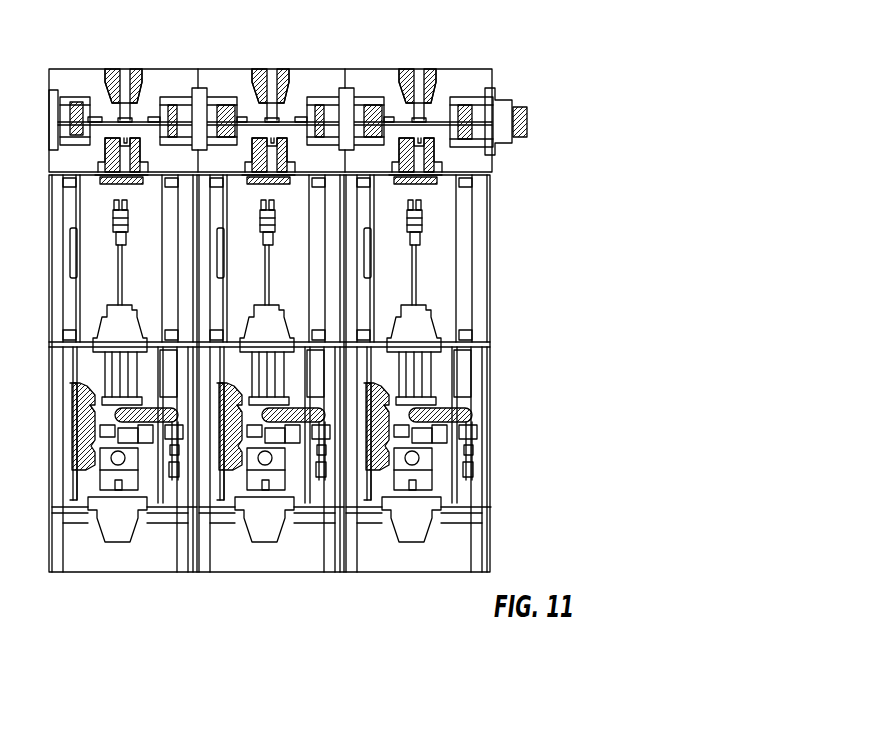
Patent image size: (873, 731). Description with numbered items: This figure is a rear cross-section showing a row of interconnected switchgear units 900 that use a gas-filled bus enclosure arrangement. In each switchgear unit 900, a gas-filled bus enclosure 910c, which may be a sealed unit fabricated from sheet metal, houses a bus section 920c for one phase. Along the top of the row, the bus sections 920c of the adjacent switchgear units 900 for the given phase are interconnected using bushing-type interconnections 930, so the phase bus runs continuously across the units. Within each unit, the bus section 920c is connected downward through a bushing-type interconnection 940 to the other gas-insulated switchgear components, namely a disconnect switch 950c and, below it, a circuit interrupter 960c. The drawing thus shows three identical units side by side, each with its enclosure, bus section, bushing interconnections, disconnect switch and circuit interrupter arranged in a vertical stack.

The switchgear unit 900 is at (411, 582).
The gas-filled bus enclosure 910c is at (152, 69).
The bus section 920c is at (433, 118).
The bushing-type interconnection 930 is at (367, 103).
The bushing-type interconnection 940 is at (437, 146).
The disconnect switch 950c is at (418, 252).
The circuit interrupter 960c is at (427, 465).